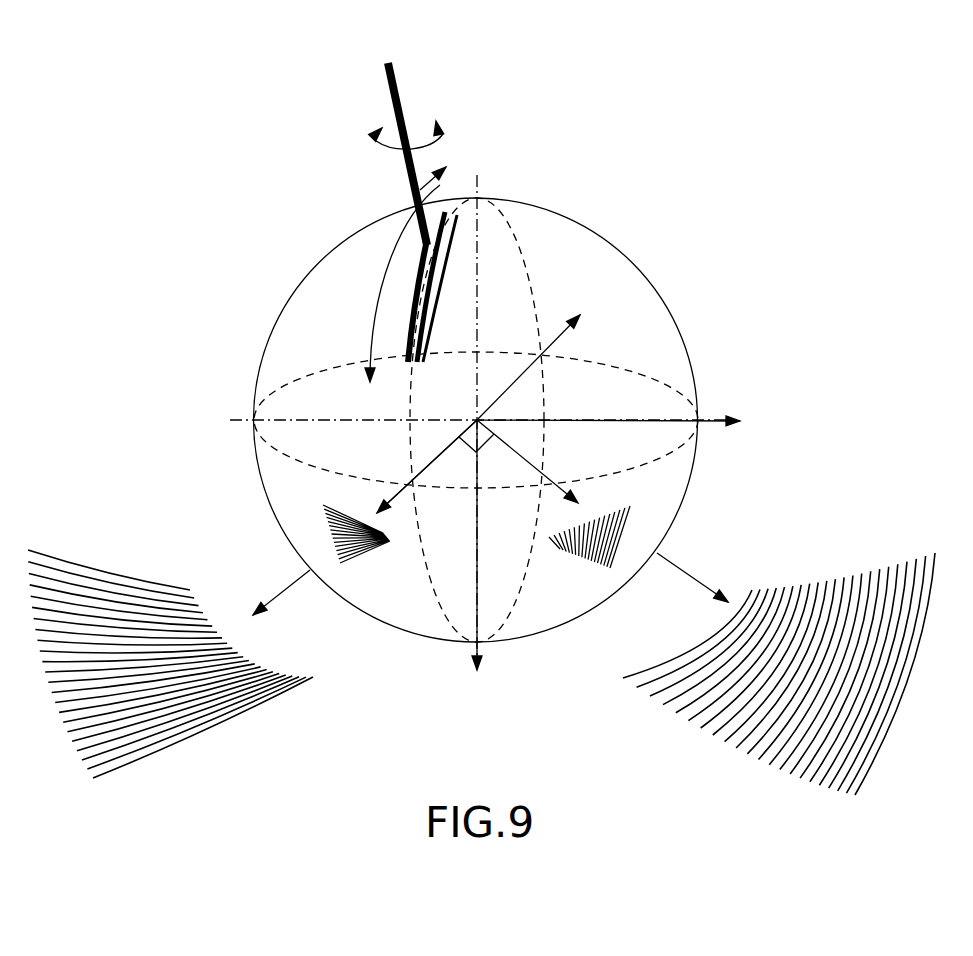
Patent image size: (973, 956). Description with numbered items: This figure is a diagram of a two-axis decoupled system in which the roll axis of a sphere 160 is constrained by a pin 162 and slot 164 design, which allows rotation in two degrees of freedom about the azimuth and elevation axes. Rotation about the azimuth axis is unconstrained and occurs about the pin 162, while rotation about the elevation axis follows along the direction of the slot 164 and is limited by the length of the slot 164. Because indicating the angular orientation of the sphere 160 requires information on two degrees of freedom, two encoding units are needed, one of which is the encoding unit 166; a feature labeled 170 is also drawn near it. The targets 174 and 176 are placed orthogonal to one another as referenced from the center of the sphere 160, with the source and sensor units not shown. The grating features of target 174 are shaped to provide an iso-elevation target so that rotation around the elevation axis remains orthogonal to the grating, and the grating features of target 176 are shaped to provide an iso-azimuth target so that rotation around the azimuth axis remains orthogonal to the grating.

The sphere 160 is at (685, 331).
The pin 162 is at (392, 85).
The slot 164 is at (417, 284).
The encoding unit 166 is at (392, 483).
The scan direction 170 is at (413, 539).
The target 174 is at (162, 760).
The target 176 is at (758, 762).